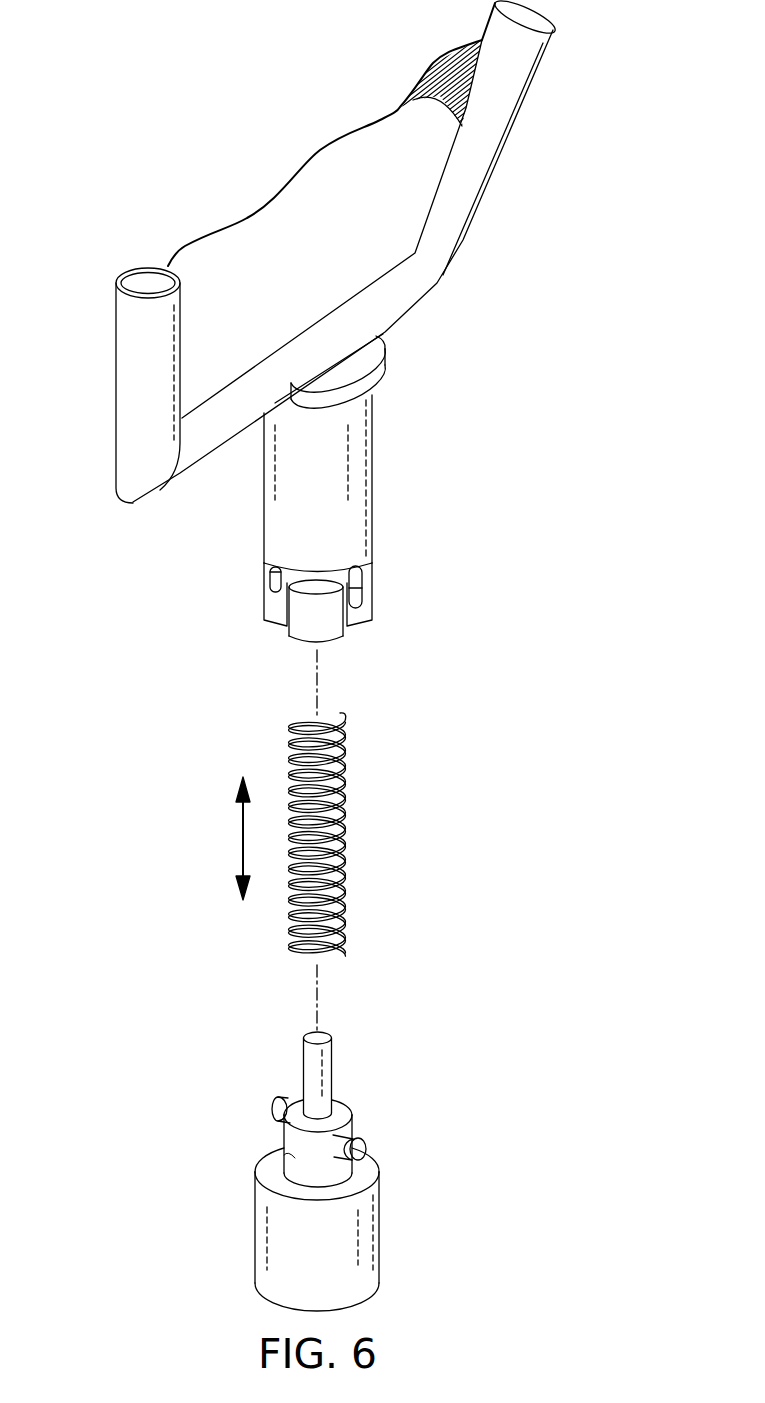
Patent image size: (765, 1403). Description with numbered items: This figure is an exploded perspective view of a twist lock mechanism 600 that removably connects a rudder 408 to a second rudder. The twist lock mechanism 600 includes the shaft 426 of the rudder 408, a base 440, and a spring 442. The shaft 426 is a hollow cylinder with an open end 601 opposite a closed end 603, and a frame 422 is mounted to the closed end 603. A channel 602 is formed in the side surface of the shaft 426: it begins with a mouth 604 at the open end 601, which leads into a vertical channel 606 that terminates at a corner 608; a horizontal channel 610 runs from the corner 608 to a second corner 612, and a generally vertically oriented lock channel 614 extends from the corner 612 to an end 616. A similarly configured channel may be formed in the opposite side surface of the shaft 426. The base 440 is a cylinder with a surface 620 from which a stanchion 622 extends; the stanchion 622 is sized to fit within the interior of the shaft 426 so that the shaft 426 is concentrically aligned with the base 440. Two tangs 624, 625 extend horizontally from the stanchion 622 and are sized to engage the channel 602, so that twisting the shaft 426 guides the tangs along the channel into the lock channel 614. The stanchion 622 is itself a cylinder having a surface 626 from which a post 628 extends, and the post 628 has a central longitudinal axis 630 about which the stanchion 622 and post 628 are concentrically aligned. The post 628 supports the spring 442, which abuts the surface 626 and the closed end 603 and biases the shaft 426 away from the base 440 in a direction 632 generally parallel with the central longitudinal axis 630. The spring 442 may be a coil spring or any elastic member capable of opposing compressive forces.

The rudder 408 is at (262, 180).
The frame 422 is at (117, 382).
The closed end 603 is at (383, 340).
The shaft 426 is at (373, 463).
The channel 602 is at (340, 540).
The mouth 604 is at (280, 628).
The vertical channel 606 is at (270, 587).
The corner 608 is at (267, 567).
The horizontal channel 610 is at (313, 580).
The corner 612 is at (368, 565).
The lock channel 614 is at (362, 588).
The end 616 is at (357, 607).
The open end 601 is at (337, 640).
The twist lock mechanism 600 is at (505, 822).
The direction 632 is at (240, 837).
The spring 442 is at (347, 847).
The central longitudinal axis 630 is at (315, 977).
The post 628 is at (303, 1058).
The surface 626 is at (342, 1108).
The tang 625 is at (277, 1097).
The tang 624 is at (358, 1137).
The stanchion 622 is at (295, 1158).
The surface 620 is at (370, 1167).
The base 440 is at (382, 1230).